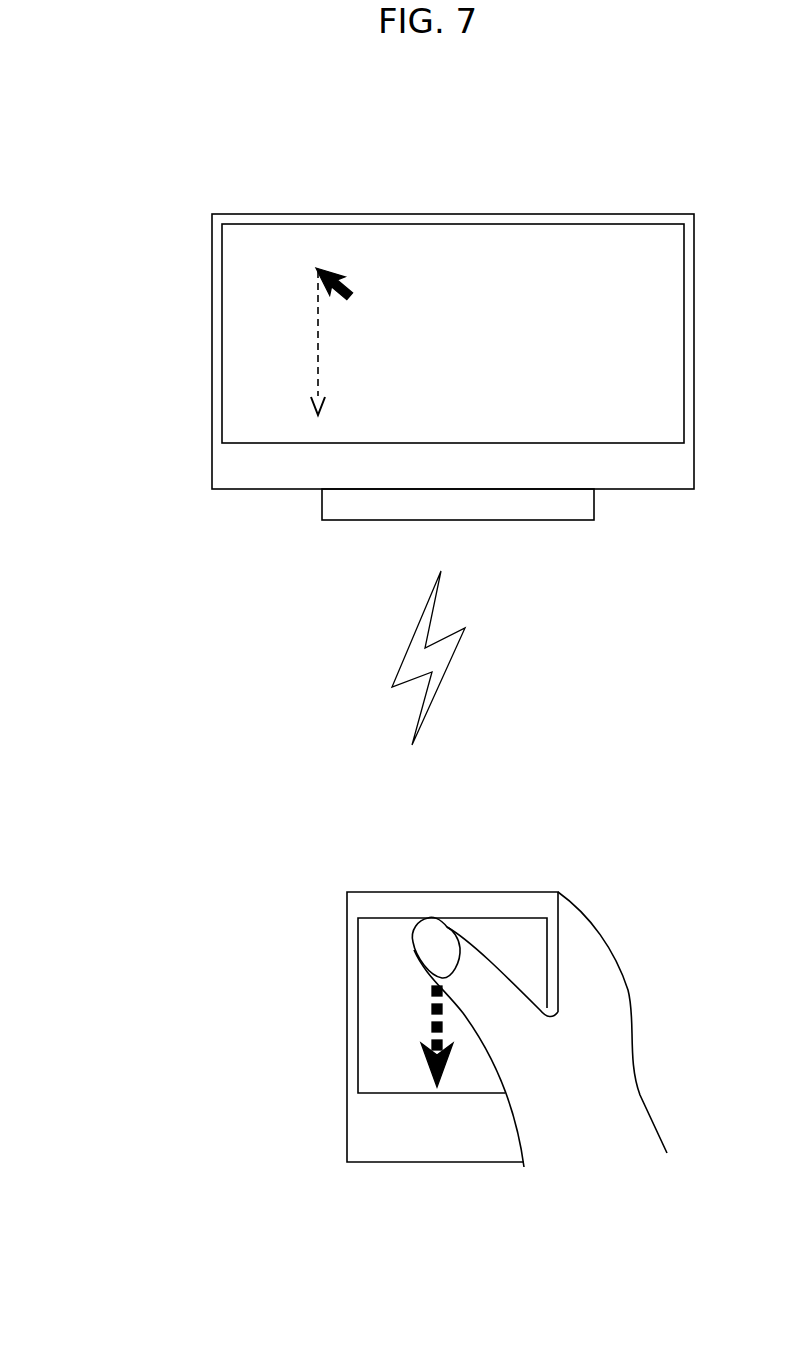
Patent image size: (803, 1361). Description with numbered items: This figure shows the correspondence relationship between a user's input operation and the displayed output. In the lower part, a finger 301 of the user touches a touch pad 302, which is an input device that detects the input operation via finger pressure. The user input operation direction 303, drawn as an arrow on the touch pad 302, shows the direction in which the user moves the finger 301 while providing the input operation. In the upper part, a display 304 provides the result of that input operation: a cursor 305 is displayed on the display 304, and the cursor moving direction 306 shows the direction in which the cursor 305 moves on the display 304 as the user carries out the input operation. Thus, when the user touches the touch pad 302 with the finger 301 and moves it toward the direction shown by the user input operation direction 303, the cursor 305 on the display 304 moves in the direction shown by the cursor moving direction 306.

The finger 301 is at (438, 950).
The touch pad 302 is at (373, 985).
The user input operation direction 303 is at (430, 1011).
The display 304 is at (242, 352).
The cursor 305 is at (337, 273).
The cursor moving direction 306 is at (318, 373).